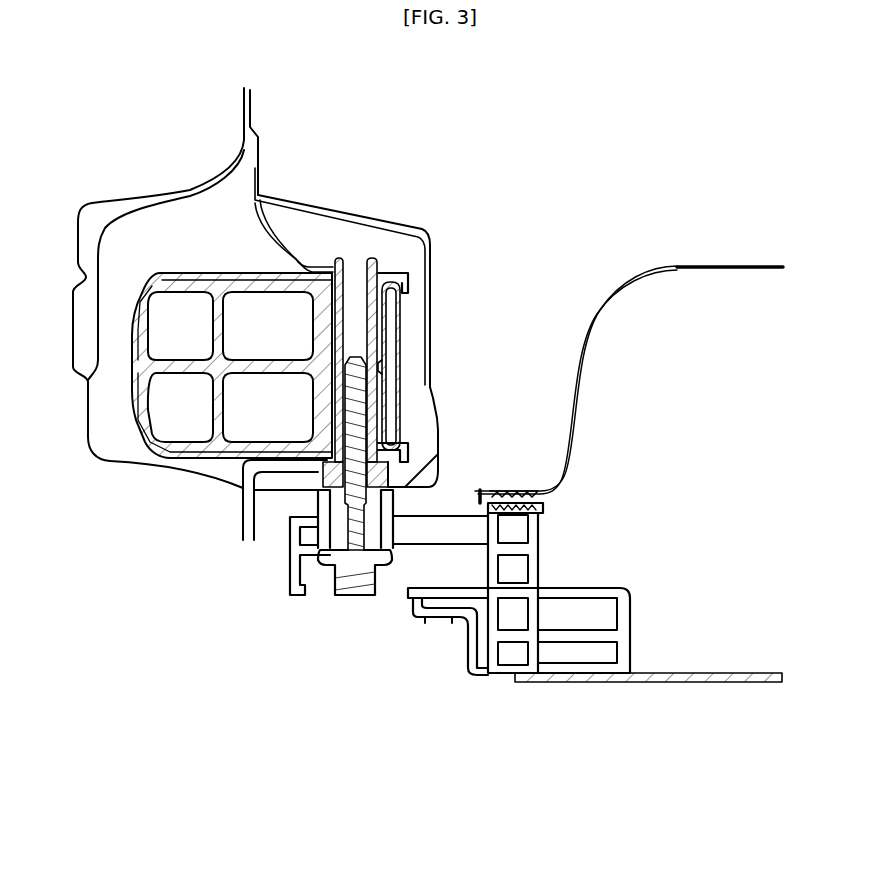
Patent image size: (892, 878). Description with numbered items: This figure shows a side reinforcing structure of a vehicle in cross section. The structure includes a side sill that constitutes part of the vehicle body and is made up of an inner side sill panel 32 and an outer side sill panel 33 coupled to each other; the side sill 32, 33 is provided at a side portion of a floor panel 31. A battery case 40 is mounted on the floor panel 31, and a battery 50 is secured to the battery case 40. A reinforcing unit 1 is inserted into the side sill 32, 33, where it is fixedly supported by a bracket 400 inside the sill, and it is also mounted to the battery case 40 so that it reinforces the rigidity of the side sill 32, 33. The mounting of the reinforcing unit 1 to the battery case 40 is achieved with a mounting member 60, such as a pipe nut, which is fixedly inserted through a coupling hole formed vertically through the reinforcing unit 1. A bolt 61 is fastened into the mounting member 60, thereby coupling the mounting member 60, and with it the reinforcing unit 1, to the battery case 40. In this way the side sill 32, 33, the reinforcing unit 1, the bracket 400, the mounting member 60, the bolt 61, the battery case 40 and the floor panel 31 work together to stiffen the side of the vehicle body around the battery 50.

The reinforcing unit 1 is at (205, 277).
The floor panel 31 is at (652, 680).
The inner side sill panel 32 is at (353, 217).
The outer side sill panel 33 is at (93, 207).
The battery case 40 is at (297, 573).
The battery 50 is at (732, 617).
The mounting member 60 is at (325, 475).
The bolt 61 is at (353, 583).
The bracket 400 is at (283, 245).